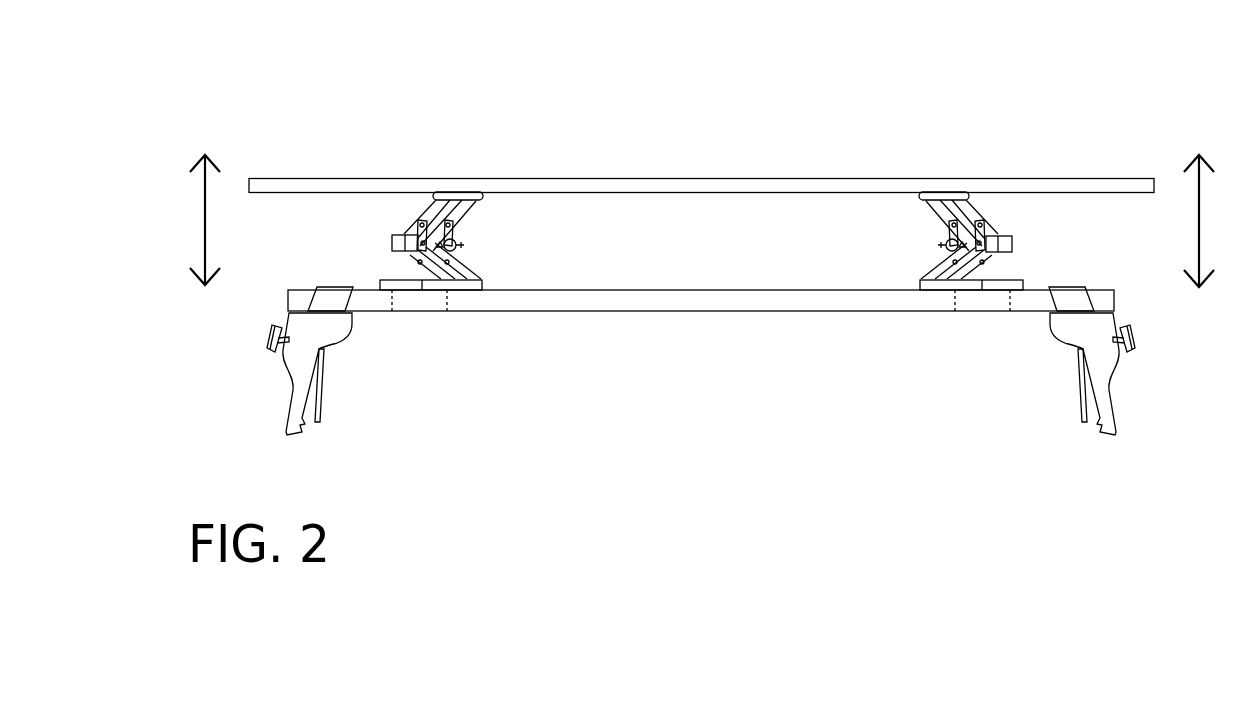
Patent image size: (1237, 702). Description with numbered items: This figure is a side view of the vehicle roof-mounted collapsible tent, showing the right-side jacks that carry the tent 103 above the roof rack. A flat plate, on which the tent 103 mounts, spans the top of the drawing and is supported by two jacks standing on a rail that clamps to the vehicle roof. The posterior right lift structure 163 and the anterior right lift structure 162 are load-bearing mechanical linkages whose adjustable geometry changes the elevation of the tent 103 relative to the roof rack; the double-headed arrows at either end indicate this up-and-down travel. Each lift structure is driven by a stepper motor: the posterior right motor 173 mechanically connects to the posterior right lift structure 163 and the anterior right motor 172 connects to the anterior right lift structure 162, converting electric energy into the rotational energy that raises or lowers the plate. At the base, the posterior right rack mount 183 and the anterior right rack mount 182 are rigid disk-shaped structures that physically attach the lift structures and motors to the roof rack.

The tent 103 is at (1098, 179).
The anterior right lift structure 162 is at (923, 217).
The posterior right lift structure 163 is at (452, 226).
The anterior right motor 172 is at (1012, 246).
The posterior right motor 173 is at (394, 245).
The anterior right rack mount 182 is at (938, 287).
The posterior right rack mount 183 is at (458, 285).